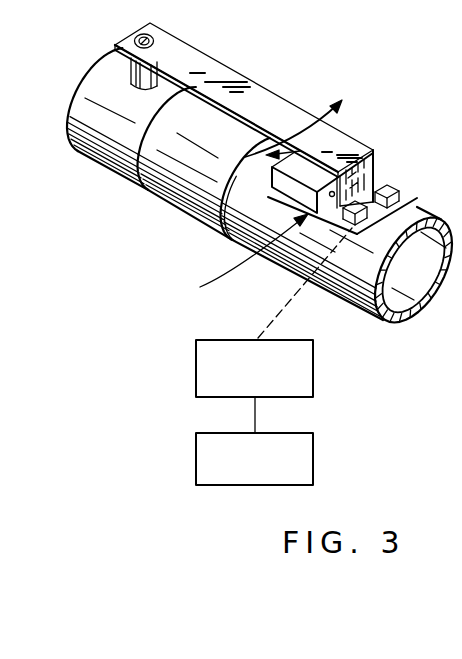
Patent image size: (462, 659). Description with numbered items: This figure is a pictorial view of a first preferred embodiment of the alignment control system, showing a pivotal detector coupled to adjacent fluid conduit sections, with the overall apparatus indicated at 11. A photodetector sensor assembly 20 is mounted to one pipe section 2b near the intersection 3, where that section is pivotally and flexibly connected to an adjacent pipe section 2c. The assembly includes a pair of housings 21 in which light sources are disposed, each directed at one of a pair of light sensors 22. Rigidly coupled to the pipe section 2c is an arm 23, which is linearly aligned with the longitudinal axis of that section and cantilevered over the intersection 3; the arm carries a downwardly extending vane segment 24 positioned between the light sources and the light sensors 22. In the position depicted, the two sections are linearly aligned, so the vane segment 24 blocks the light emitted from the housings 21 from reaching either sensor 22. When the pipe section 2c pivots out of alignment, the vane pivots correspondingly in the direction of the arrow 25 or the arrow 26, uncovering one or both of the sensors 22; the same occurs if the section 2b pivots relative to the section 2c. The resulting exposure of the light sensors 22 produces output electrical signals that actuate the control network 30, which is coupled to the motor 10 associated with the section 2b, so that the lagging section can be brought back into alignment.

The pipe section 2b is at (341, 279).
The pipe section 2c is at (77, 97).
The intersection 3 is at (163, 190).
The motor 10 is at (304, 450).
The apparatus 11 is at (0, 395).
The photodetector sensor assembly 20 is at (240, 256).
The housings 21 is at (403, 201).
The light sensors 22 is at (318, 188).
The arm 23 is at (232, 80).
The vane segment 24 is at (378, 176).
The arrow 25 is at (303, 134).
The arrow 26 is at (345, 146).
The control network 30 is at (313, 370).